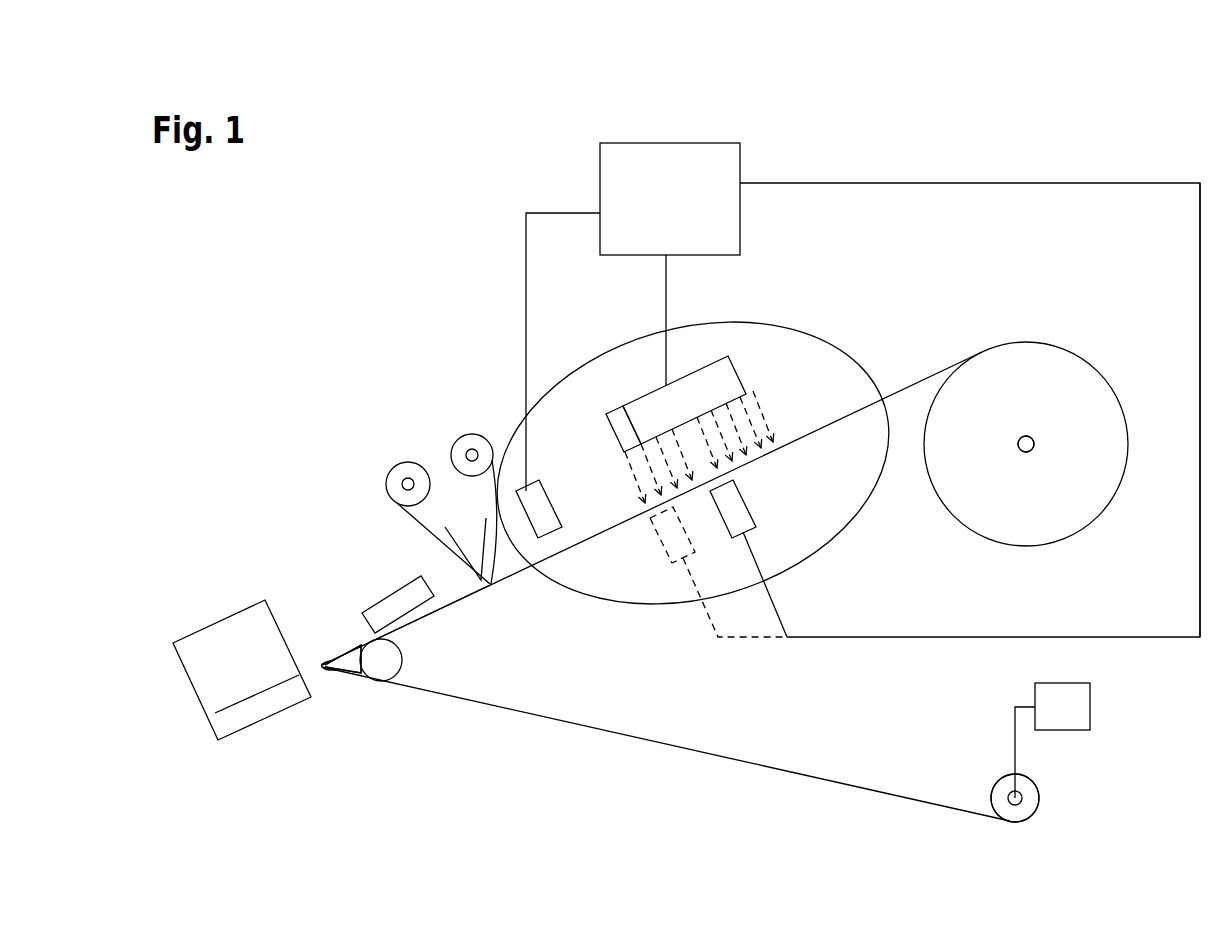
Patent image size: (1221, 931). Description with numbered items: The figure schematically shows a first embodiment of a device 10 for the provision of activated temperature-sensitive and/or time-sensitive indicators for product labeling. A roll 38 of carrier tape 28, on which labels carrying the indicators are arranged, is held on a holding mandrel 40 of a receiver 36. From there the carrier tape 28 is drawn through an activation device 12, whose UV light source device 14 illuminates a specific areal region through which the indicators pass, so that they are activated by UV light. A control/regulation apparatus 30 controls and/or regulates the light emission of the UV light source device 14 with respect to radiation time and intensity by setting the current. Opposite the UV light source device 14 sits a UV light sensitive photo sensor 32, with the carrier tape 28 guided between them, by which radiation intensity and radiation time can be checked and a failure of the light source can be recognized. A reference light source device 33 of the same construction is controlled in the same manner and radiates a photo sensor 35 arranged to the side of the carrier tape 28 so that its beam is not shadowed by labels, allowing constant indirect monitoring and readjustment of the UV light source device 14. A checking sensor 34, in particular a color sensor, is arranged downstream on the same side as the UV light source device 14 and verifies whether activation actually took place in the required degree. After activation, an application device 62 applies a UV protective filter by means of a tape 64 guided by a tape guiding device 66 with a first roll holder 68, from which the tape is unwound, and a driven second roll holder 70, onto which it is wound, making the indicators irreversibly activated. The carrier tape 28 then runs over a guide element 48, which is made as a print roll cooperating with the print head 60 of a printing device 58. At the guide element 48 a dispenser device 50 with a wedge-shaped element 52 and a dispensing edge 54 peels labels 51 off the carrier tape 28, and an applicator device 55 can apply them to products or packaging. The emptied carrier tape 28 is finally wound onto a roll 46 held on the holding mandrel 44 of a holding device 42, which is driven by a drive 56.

The device for the provision of activated indicators 10 is at (938, 94).
The activation device 12 is at (749, 130).
The UV light source device 14 is at (726, 374).
The carrier tape 28 is at (921, 380).
The control/regulation apparatus 30 is at (640, 160).
The photo sensor 32 is at (736, 510).
The reference light source device 33 is at (626, 410).
The checking sensor 34 is at (540, 506).
The photo sensor 35 is at (662, 544).
The receiver 36 is at (1040, 454).
The roll 38 is at (1027, 357).
The holding mandrel 40 is at (1034, 442).
The holding device 42 is at (1034, 826).
The holding mandrel 44 is at (1024, 798).
The roll 46 is at (1000, 794).
The guide element 48 is at (394, 660).
The dispenser device 50 is at (330, 650).
The label 51 is at (256, 698).
The wedge-shaped element 52 is at (360, 674).
The dispensing edge 54 is at (325, 672).
The applicator device 55 is at (202, 686).
The drive 56 is at (1076, 708).
The printing device 58 is at (338, 580).
The print head 60 is at (396, 602).
The application device 62 is at (432, 407).
The tape 64 is at (447, 528).
The tape guiding device 66 is at (396, 442).
The first roll holder 68 is at (474, 454).
The second roll holder 70 is at (404, 484).